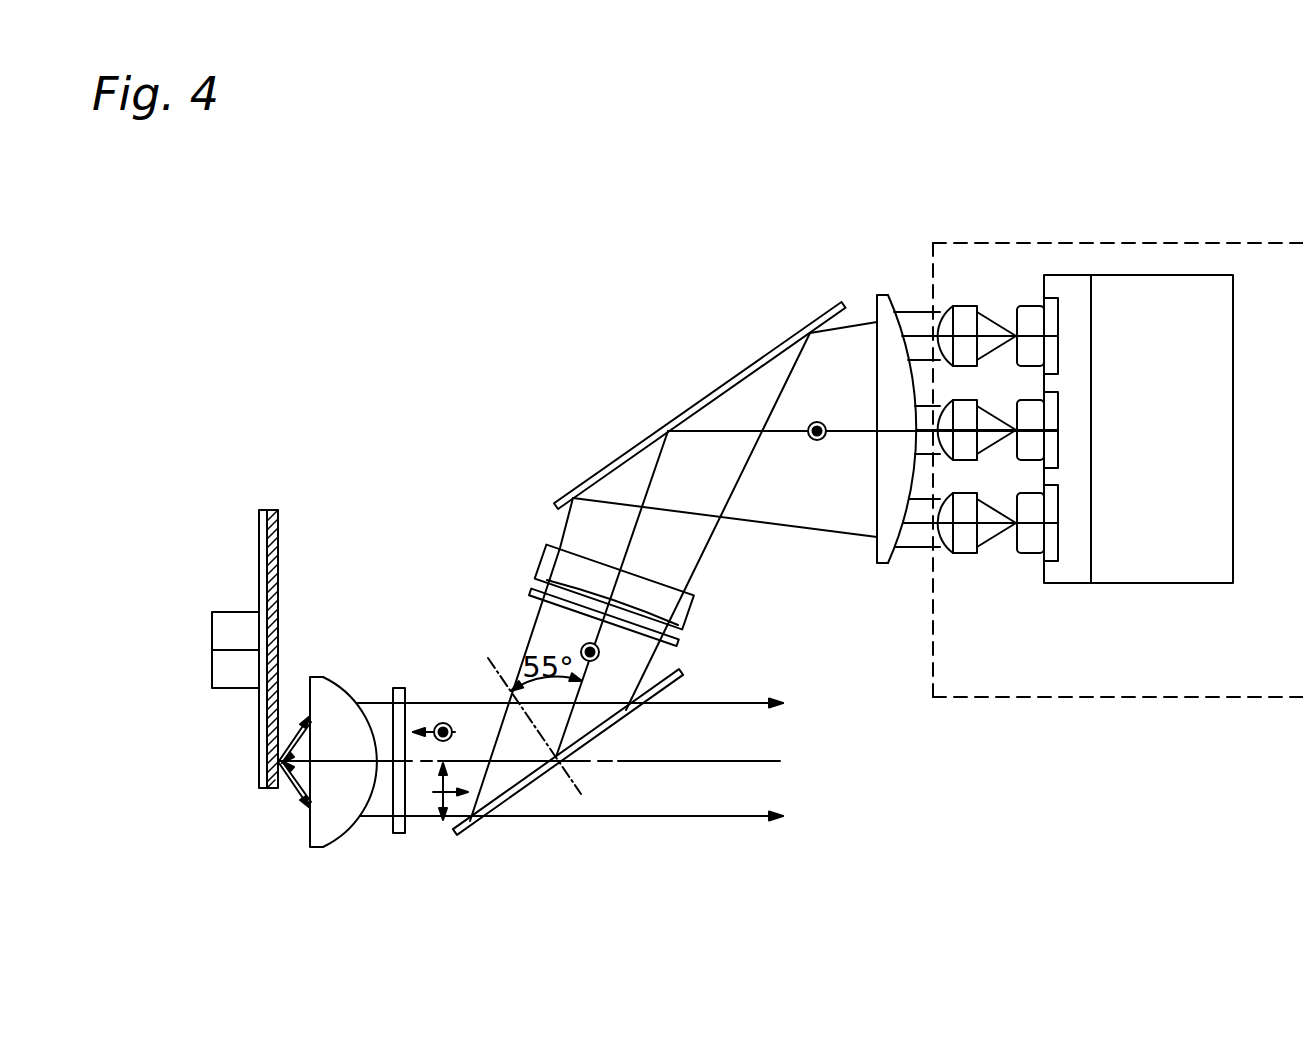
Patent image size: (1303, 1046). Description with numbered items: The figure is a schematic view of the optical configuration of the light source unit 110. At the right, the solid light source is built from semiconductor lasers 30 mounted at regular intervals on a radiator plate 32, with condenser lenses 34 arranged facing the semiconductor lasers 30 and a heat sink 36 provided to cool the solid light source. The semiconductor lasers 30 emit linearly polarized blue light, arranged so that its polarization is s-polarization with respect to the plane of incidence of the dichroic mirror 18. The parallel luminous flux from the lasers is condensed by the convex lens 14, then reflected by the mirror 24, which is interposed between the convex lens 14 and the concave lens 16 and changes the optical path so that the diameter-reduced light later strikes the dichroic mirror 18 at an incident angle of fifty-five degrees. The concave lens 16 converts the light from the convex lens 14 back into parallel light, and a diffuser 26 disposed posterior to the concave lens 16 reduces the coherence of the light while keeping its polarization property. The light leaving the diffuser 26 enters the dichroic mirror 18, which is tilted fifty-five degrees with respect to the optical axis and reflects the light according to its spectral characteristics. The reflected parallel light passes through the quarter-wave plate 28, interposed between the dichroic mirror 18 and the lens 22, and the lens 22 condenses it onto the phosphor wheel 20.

The light source unit 110 is at (278, 261).
The convex lens 14 is at (888, 297).
The concave lens 16 is at (683, 608).
The dichroic mirror 18 is at (537, 780).
The phosphor wheel 20 is at (258, 522).
The lens 22 is at (327, 690).
The mirror 24 is at (751, 365).
The diffuser 26 is at (530, 590).
The λ/4 plate 28 is at (405, 688).
The semiconductor laser 30 is at (1035, 555).
The radiator plate 32 is at (1070, 552).
The condenser lens 34 is at (967, 553).
The heat sink 36 is at (1162, 550).